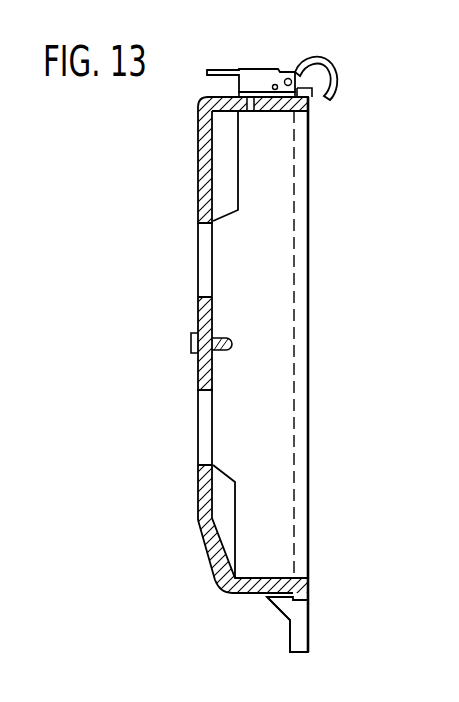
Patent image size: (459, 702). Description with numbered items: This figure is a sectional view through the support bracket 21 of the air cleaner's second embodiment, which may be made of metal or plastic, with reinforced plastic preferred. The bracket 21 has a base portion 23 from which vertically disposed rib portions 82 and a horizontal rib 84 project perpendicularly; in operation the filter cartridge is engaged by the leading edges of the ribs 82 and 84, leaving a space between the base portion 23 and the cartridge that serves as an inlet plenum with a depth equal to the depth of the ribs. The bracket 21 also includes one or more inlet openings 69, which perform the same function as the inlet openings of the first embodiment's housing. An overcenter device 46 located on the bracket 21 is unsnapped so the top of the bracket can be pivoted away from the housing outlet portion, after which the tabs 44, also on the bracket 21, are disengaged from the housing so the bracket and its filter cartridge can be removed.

The support bracket 21 is at (199, 535).
The base portion 23 is at (198, 168).
The tabs 44 is at (300, 637).
The overcenter device 46 is at (267, 77).
The inlet openings 69 is at (198, 233).
The vertically disposed rib portions 82 is at (239, 167).
The horizontal rib 84 is at (227, 338).